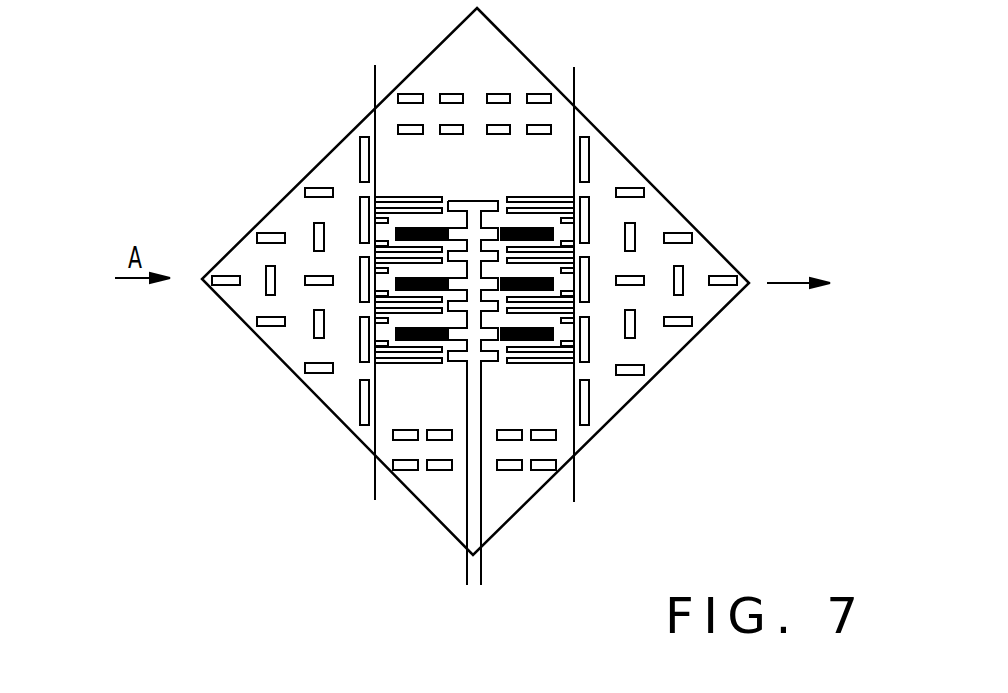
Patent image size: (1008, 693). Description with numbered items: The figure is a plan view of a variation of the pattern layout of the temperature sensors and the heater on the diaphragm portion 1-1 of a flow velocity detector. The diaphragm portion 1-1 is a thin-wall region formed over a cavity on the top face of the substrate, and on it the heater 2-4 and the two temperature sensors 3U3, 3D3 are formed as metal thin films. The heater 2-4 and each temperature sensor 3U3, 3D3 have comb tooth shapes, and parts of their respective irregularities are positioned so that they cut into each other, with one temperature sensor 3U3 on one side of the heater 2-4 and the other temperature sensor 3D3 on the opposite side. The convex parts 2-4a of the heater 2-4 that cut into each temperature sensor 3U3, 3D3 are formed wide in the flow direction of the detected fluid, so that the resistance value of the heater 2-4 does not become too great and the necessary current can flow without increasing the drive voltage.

The diaphragm portion 1-1 is at (668, 222).
The heater 2-4 is at (483, 200).
The convex parts 2-4a is at (629, 258).
The temperature sensor 3U3 is at (395, 358).
The temperature sensor 3D3 is at (552, 350).